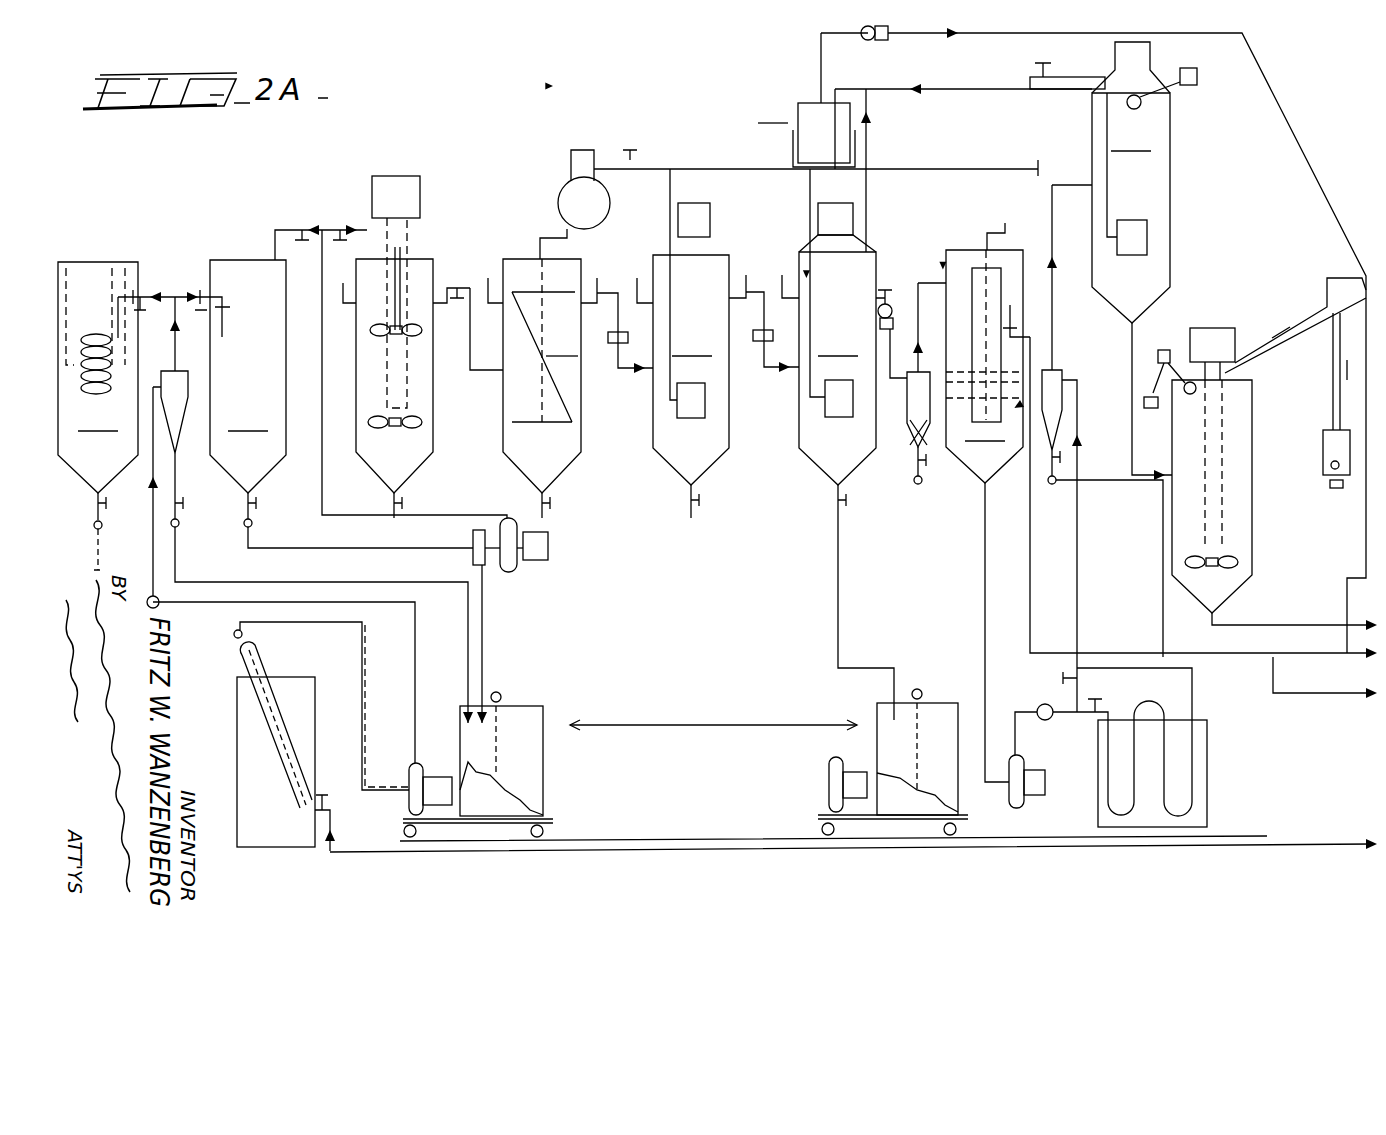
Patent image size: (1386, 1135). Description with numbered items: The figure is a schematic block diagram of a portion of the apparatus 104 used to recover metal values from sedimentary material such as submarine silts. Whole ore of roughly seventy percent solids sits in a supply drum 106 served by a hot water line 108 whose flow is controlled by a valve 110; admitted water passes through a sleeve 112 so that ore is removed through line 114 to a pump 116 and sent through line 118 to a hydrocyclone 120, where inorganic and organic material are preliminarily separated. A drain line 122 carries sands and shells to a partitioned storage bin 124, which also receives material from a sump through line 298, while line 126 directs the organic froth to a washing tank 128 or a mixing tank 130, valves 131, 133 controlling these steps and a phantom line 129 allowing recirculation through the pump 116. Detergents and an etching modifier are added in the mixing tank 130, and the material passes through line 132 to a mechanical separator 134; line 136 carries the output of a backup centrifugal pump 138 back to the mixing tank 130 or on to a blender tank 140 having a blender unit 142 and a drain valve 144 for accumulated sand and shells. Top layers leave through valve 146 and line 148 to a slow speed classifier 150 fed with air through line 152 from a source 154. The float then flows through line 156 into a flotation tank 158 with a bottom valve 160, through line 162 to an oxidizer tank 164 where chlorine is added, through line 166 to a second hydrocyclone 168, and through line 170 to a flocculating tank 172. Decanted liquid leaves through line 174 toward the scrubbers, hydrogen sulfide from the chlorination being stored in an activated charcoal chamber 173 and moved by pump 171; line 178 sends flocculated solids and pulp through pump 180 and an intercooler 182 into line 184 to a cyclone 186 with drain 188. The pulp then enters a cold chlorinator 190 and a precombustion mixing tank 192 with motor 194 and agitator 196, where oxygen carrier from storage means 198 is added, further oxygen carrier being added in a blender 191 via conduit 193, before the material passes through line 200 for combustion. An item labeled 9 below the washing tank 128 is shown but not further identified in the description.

The drain outlet 9 is at (96, 528).
The apparatus 104 is at (516, 154).
The supply drum 106 is at (255, 828).
The hot water line 108 is at (350, 852).
The valve 110 is at (332, 802).
The sleeve 112 is at (248, 664).
The line 114 is at (297, 623).
The pump 116 is at (410, 782).
The line 118 is at (150, 518).
The hydrocyclone 120 is at (180, 395).
The drain line 122 is at (176, 565).
The partitioned storage bin 124 is at (522, 715).
The line 126 is at (210, 354).
The washing tank 128 is at (98, 377).
The line 129 is at (368, 700).
The mixing tank 130 is at (288, 359).
The valve 131 is at (150, 296).
The line 132 is at (328, 552).
The valve 133 is at (200, 296).
The separator 134 is at (478, 550).
The line 136 is at (445, 518).
The backup centrifugal pump 138 is at (518, 568).
The blender tank 140 is at (418, 398).
The blender unit 142 is at (420, 205).
The drain valve 144 is at (398, 497).
The valve 146 is at (458, 288).
The line 148 is at (470, 362).
The slow speed classifier 150 is at (542, 388).
The line 152 is at (540, 240).
The air source 154 is at (582, 165).
The line 156 is at (606, 292).
The flotation tank 158 is at (691, 327).
The valve 160 is at (708, 505).
The line 162 is at (752, 292).
The oxidizer tank 164 is at (846, 404).
The line 166 is at (893, 340).
The second hydrocyclone 168 is at (920, 440).
The line 170 is at (938, 280).
The pump 171 is at (882, 40).
The flocculating tank 172 is at (988, 353).
The activated charcoal chamber 173 is at (795, 156).
The line 174 is at (1030, 555).
The line 178 is at (985, 635).
The pump 180 is at (1068, 766).
The intercooler 182 is at (1207, 788).
The line 184 is at (1080, 522).
The cyclone 186 is at (1050, 410).
The drain 188 is at (1052, 486).
The cold chlorinator 190 is at (1000, 261).
The blender 191 is at (1325, 455).
The precombustion mixing tank 192 is at (1252, 445).
The conduit 193 is at (1348, 695).
The motor 194 is at (1212, 354).
The agitator 196 is at (1236, 562).
The storage means 198 is at (1323, 312).
The line 200 is at (1270, 625).
The line 298 is at (482, 645).